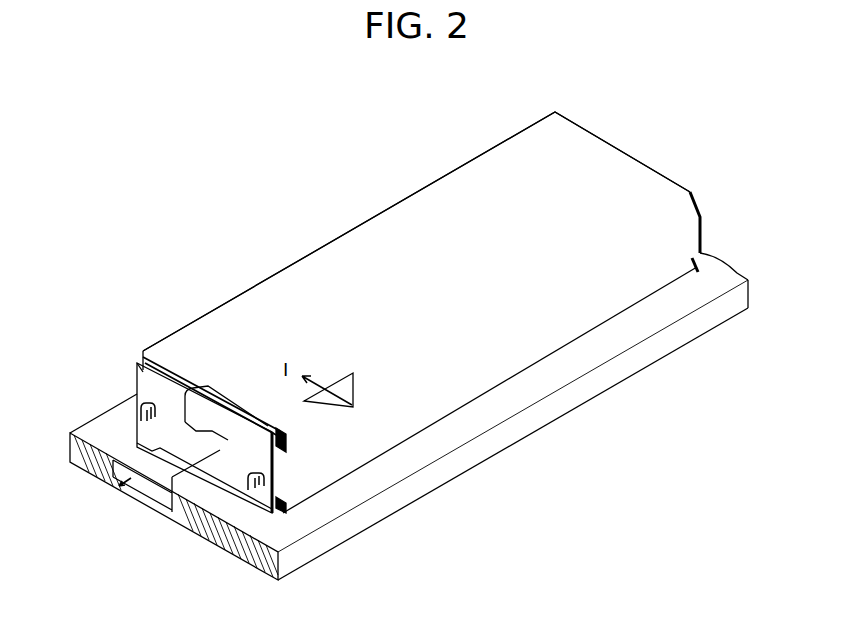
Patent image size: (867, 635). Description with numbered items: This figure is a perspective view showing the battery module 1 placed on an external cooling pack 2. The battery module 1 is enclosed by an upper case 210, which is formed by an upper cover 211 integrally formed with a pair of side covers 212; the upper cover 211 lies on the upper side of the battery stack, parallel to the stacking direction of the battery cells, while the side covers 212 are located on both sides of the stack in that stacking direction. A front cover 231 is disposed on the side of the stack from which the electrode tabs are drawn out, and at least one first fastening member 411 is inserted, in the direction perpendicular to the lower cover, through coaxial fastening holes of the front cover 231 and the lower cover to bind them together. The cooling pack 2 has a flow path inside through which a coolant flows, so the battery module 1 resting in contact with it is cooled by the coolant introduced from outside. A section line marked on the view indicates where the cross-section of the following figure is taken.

The battery module 1 is at (88, 96).
The cooling pack 2 is at (220, 450).
The upper case 210 is at (372, 167).
The upper cover 211 is at (316, 268).
The side covers 212 is at (483, 340).
The front cover 231 is at (160, 390).
The first fastening member 411 is at (275, 478).